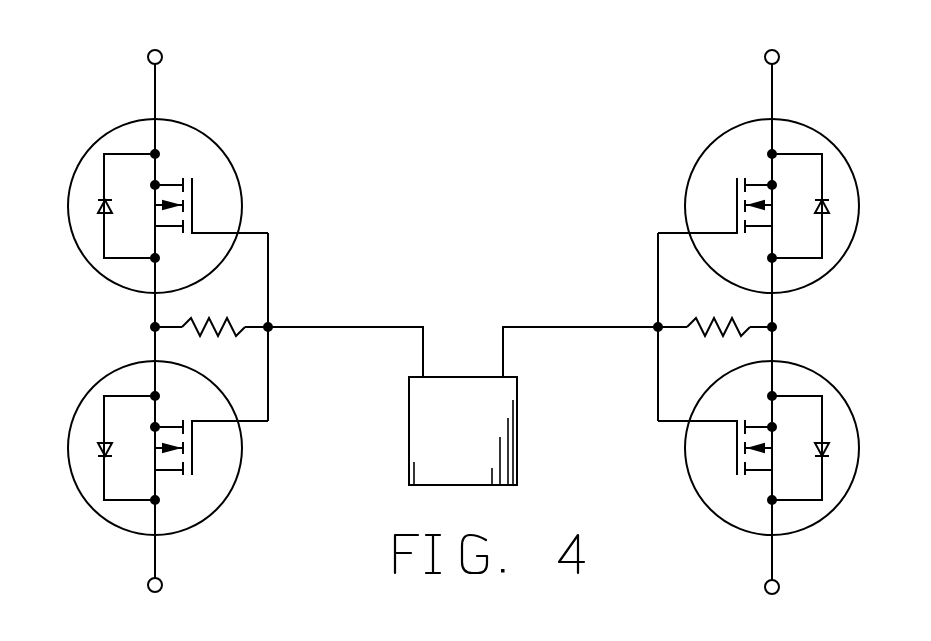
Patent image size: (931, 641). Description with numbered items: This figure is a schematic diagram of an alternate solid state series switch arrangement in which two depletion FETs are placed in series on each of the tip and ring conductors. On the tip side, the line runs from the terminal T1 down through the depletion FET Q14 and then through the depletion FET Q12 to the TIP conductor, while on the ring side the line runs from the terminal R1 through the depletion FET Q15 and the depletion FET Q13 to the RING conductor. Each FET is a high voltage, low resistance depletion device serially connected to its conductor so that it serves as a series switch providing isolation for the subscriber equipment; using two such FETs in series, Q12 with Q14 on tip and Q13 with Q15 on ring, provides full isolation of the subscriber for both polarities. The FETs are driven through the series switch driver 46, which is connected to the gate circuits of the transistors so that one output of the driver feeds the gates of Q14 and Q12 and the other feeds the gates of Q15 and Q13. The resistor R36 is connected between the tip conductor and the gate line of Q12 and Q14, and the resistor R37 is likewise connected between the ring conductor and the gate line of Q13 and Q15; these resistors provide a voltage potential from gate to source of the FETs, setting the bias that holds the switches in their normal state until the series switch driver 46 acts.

The series switch driver 46 is at (413, 431).
The depletion FET Q14 is at (167, 198).
The depletion FET Q12 is at (167, 439).
The depletion FET Q15 is at (760, 205).
The depletion FET Q13 is at (760, 447).
The resistor R36 is at (220, 316).
The resistor R37 is at (718, 315).
The T1 terminal T1 is at (136, 56).
The tip conductor TIP is at (133, 586).
The R1 terminal R1 is at (786, 56).
The ring conductor RING is at (799, 590).